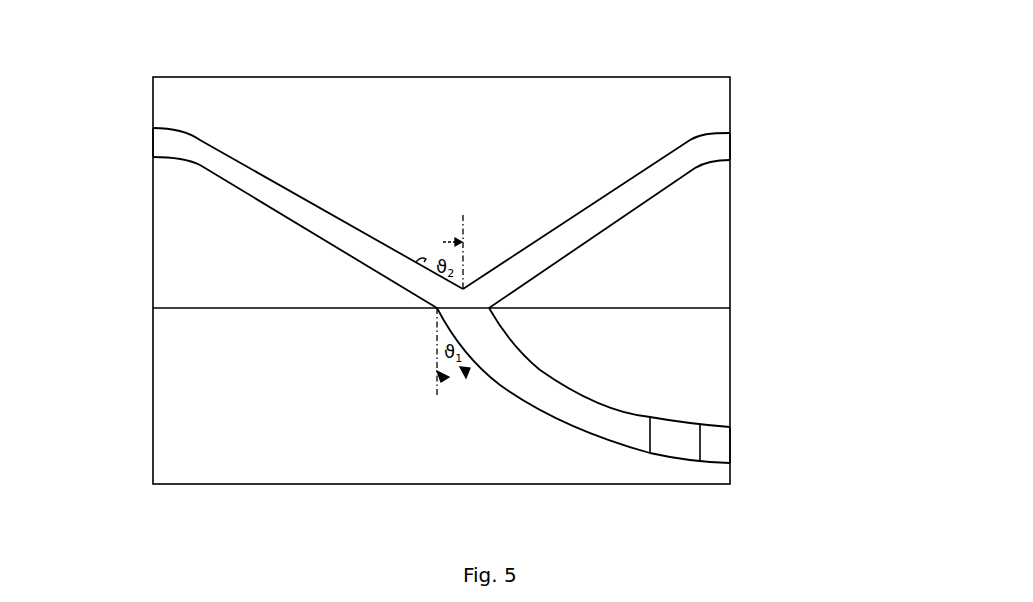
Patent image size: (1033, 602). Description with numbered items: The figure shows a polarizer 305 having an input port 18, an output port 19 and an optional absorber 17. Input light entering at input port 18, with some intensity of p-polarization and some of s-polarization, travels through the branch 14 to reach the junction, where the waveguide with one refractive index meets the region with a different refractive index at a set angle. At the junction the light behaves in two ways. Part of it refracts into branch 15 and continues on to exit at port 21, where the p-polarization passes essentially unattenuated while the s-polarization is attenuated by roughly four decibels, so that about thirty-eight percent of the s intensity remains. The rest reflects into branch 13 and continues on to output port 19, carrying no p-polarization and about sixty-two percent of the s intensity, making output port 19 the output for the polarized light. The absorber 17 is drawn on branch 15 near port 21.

The polarizer 305 is at (441, 248).
The branch 13 is at (660, 163).
The branch 14 is at (252, 178).
The branch 15 is at (530, 382).
The absorber 17 is at (670, 433).
The input port 18 is at (97, 142).
The output port 19 is at (775, 147).
The port 21 is at (782, 445).